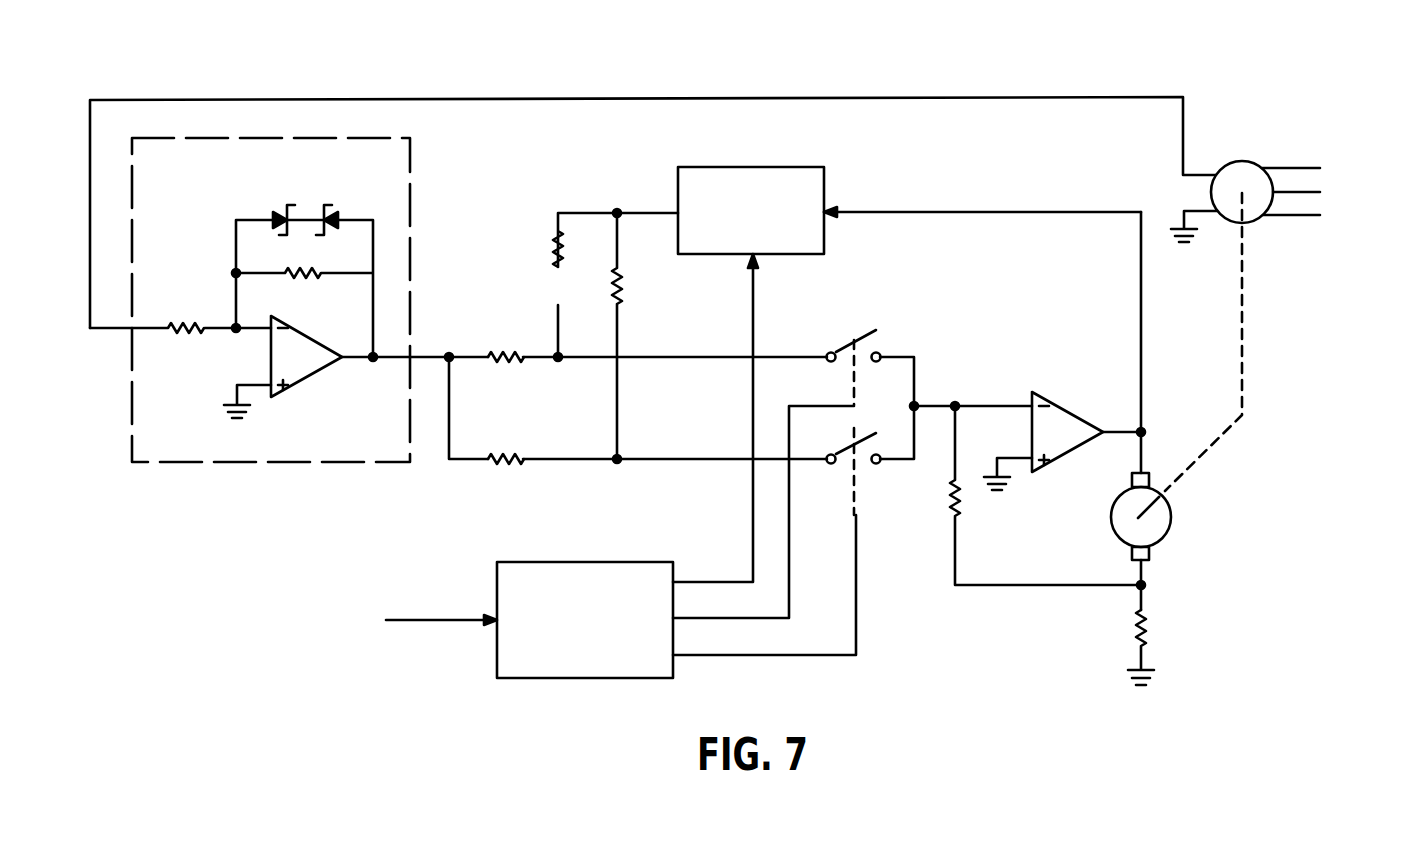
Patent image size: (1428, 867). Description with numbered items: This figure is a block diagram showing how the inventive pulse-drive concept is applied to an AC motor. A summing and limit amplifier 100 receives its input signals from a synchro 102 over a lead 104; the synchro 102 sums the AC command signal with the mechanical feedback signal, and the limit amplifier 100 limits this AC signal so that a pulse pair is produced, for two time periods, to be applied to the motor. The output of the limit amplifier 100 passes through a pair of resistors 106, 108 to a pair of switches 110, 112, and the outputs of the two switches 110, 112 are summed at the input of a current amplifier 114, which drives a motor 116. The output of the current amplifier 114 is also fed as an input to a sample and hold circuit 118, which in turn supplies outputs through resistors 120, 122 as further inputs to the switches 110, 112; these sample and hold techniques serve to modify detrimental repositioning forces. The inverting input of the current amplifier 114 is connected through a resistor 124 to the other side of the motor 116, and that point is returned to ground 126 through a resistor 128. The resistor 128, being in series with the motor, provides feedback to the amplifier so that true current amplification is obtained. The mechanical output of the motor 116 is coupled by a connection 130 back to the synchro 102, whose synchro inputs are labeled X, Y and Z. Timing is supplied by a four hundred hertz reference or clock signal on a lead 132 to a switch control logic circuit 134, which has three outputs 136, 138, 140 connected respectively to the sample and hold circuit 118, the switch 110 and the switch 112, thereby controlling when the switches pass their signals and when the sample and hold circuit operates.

The summing and limit amplifier 100 is at (296, 300).
The synchro 102 is at (1293, 147).
The lead 104 is at (653, 178).
The resistor 106 is at (508, 332).
The resistor 108 is at (512, 434).
The switch 110 is at (855, 334).
The switch 112 is at (869, 485).
The current amplifier 114 is at (1062, 419).
The motor 116 is at (1192, 411).
The sample and hold circuit 118 is at (909, 183).
The resistor 120 is at (581, 285).
The resistor 122 is at (657, 336).
The resistor 124 is at (1045, 495).
The ground 126 is at (1164, 653).
The resistor 128 is at (1104, 628).
The connection 130 is at (1217, 351).
The lead 132 is at (377, 602).
The switch control logic circuit 134 is at (585, 593).
The output 136 is at (715, 418).
The output 138 is at (765, 512).
The output 140 is at (804, 585).